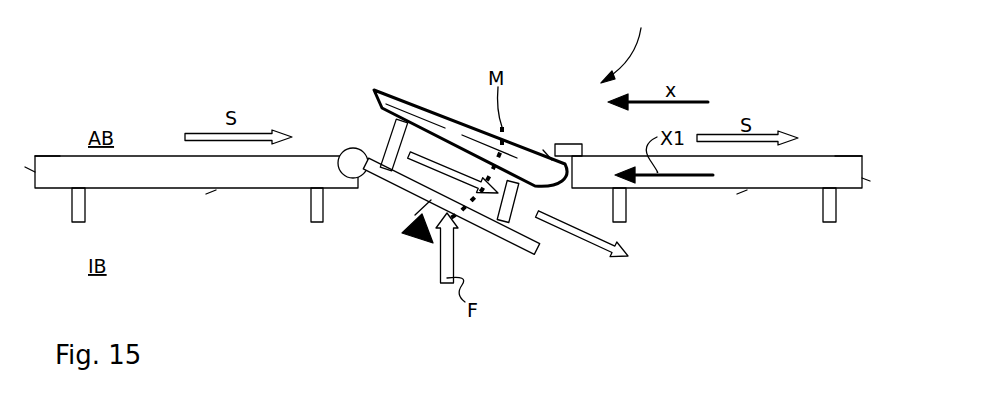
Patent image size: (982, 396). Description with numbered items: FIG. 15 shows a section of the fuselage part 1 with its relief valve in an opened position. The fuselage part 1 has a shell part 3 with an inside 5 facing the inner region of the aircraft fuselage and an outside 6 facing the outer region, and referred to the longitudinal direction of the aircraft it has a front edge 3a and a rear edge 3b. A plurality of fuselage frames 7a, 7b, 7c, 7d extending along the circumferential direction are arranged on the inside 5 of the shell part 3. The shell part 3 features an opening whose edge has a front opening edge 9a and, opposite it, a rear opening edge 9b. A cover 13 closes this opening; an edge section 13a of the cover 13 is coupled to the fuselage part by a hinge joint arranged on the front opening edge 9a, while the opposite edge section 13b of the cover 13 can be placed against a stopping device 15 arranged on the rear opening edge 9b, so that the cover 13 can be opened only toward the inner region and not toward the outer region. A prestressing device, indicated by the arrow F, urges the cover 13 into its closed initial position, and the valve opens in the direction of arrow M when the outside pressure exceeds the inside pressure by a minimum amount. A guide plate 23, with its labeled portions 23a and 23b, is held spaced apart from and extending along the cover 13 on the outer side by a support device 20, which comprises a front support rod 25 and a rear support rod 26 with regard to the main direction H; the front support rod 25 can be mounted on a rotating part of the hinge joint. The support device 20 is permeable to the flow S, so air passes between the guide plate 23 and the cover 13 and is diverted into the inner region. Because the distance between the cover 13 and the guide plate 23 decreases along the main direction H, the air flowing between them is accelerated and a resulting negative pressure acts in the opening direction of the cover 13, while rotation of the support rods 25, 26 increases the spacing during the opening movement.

The fuselage part 1 is at (626, 43).
The shell part 3 is at (158, 177).
The front edge 3a is at (27, 168).
The rear edge 3b is at (864, 180).
The inside 5 is at (216, 192).
The outside 6 is at (40, 156).
The fuselage frame 7a is at (86, 210).
The fuselage frame 7b is at (311, 205).
The fuselage frame 7c is at (626, 211).
The fuselage frame 7d is at (823, 213).
The front opening edge 9a is at (370, 183).
The rear opening edge 9b is at (541, 148).
The cover 13 is at (451, 213).
The edge section of the cover 13a is at (381, 182).
The edge section of the cover 13b is at (530, 252).
The stopping device 15 is at (572, 141).
The support device 20 is at (452, 106).
The guide plate 23 is at (443, 128).
The deflector plate leading edge 23a is at (377, 92).
The deflector plate trailing edge 23b is at (540, 163).
The front support rod 25 is at (383, 152).
The rear support rod 26 is at (545, 237).